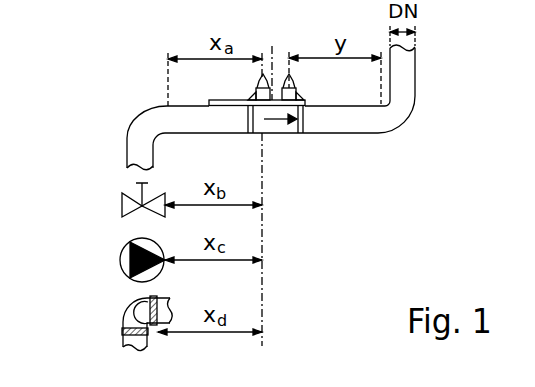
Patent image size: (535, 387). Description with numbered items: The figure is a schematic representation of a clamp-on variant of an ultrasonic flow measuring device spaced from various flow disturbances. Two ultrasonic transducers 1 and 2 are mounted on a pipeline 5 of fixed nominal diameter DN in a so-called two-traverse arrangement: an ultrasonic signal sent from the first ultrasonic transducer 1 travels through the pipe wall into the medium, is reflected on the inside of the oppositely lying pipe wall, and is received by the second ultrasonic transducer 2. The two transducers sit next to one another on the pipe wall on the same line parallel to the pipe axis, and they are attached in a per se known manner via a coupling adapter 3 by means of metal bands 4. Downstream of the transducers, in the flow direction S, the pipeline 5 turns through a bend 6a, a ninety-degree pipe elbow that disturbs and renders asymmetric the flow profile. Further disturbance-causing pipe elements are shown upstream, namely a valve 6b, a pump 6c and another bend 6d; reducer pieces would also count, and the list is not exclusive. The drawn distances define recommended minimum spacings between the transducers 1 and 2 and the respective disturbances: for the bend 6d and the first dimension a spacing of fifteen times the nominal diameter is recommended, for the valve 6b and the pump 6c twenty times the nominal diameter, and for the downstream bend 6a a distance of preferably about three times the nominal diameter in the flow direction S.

The first ultrasonic transducer 1 is at (292, 92).
The second ultrasonic transducer 2 is at (272, 61).
The coupling adapter 3 is at (213, 100).
The metal bands 4 is at (305, 133).
The pipeline 5 is at (375, 125).
The bend 6a is at (411, 99).
The valve 6b is at (122, 207).
The pump 6c is at (120, 257).
The other bend 6d is at (122, 310).
The flow direction S is at (268, 122).